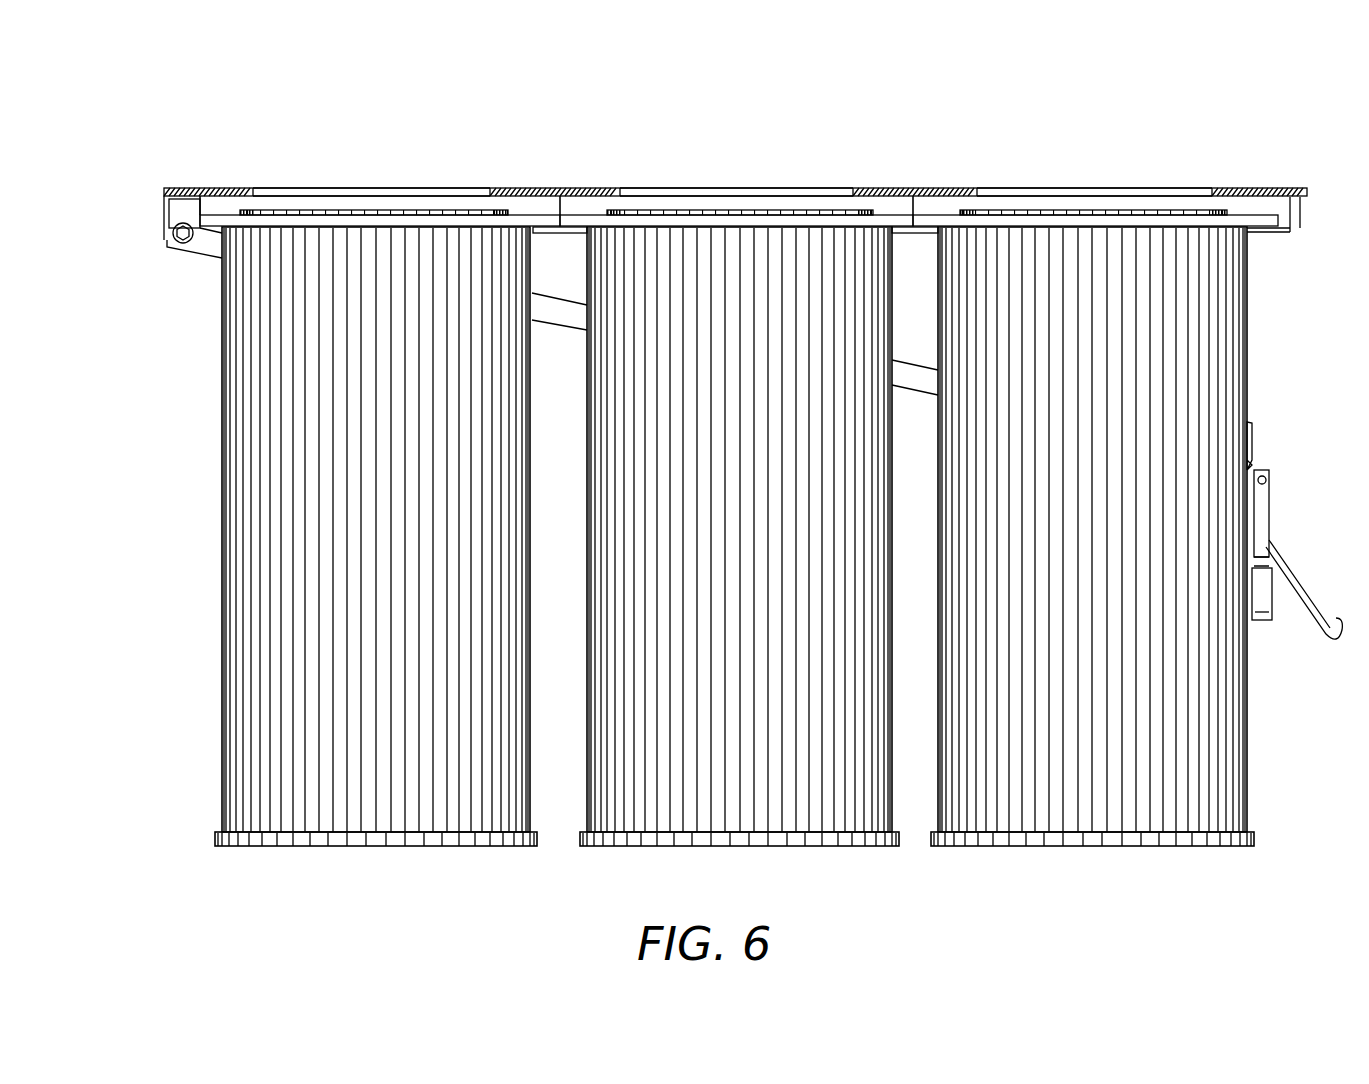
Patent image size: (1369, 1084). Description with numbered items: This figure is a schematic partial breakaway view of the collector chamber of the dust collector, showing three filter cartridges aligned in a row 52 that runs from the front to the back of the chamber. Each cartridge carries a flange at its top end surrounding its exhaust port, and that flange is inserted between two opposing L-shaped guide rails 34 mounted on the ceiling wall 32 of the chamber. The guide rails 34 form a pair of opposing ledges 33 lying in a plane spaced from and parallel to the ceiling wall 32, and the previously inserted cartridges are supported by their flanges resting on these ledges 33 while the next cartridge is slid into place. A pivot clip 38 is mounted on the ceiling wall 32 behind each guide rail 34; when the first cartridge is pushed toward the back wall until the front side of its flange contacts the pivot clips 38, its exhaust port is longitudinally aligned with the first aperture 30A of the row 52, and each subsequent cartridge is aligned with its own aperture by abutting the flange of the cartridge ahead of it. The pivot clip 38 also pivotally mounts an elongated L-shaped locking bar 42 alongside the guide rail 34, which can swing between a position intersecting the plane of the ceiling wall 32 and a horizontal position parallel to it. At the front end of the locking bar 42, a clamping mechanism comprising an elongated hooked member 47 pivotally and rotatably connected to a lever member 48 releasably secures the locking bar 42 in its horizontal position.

The first aperture 30A is at (320, 182).
The ceiling wall 32 is at (1300, 198).
The ledge 33 is at (1290, 233).
The guide rail 34 is at (1267, 206).
The pivot clip 38 is at (188, 210).
The locking bar 42 is at (215, 250).
The hooked member 47 is at (1333, 640).
The lever member 48 is at (1262, 622).
The row 52 is at (182, 637).